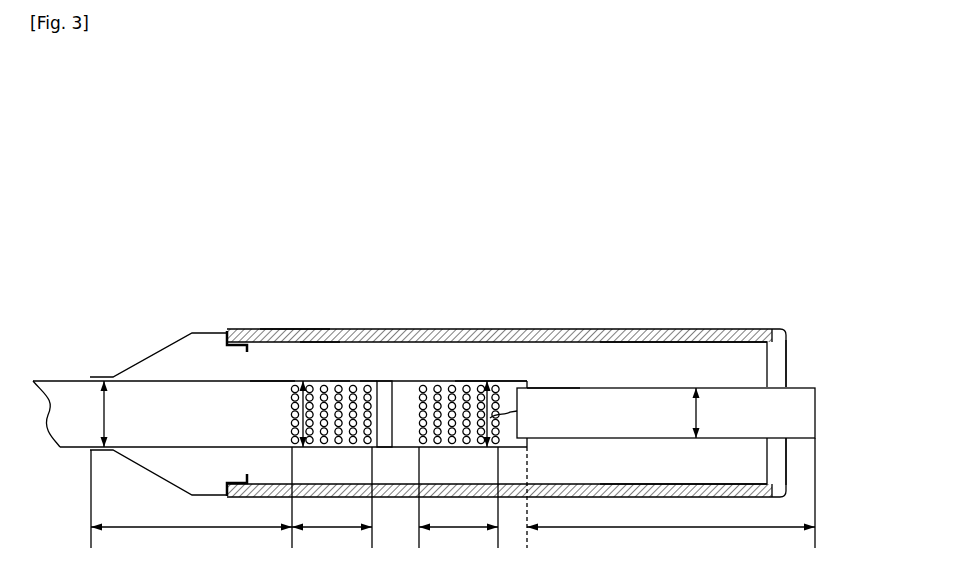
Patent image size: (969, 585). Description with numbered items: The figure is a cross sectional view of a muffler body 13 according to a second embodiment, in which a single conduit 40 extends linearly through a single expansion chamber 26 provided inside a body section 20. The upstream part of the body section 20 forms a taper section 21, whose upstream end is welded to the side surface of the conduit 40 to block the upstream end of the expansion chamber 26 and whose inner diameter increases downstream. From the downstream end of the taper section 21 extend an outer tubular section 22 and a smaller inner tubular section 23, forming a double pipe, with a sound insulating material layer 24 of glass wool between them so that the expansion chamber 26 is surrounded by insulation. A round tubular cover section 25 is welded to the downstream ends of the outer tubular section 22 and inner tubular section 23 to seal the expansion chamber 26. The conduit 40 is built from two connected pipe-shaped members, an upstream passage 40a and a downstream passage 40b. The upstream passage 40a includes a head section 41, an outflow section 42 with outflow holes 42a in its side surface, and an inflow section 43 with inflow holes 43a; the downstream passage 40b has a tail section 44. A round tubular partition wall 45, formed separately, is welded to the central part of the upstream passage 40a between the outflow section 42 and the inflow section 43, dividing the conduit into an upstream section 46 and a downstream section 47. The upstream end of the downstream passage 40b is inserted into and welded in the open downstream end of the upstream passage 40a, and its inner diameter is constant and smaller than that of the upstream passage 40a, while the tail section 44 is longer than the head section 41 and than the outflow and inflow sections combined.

The muffler body 13 is at (351, 178).
The body section 20 is at (140, 203).
The taper section 21 is at (178, 341).
The outer tubular section 22 is at (250, 329).
The inner tubular section 23 is at (295, 329).
The sound insulating material layer 24 is at (320, 329).
The cover section 25 is at (786, 358).
The expansion chamber 26 is at (695, 372).
The conduit 40 is at (557, 215).
The upstream passage 40a is at (166, 371).
The downstream passage 40b is at (622, 378).
The head section 41 is at (265, 381).
The outflow section 42 is at (393, 408).
The outflow holes 42a is at (340, 381).
The inflow section 43 is at (490, 381).
The inflow holes 43a is at (520, 381).
The tail section 44 is at (552, 381).
The partition wall 45 is at (463, 381).
The upstream section 46 is at (348, 257).
The downstream section 47 is at (588, 257).